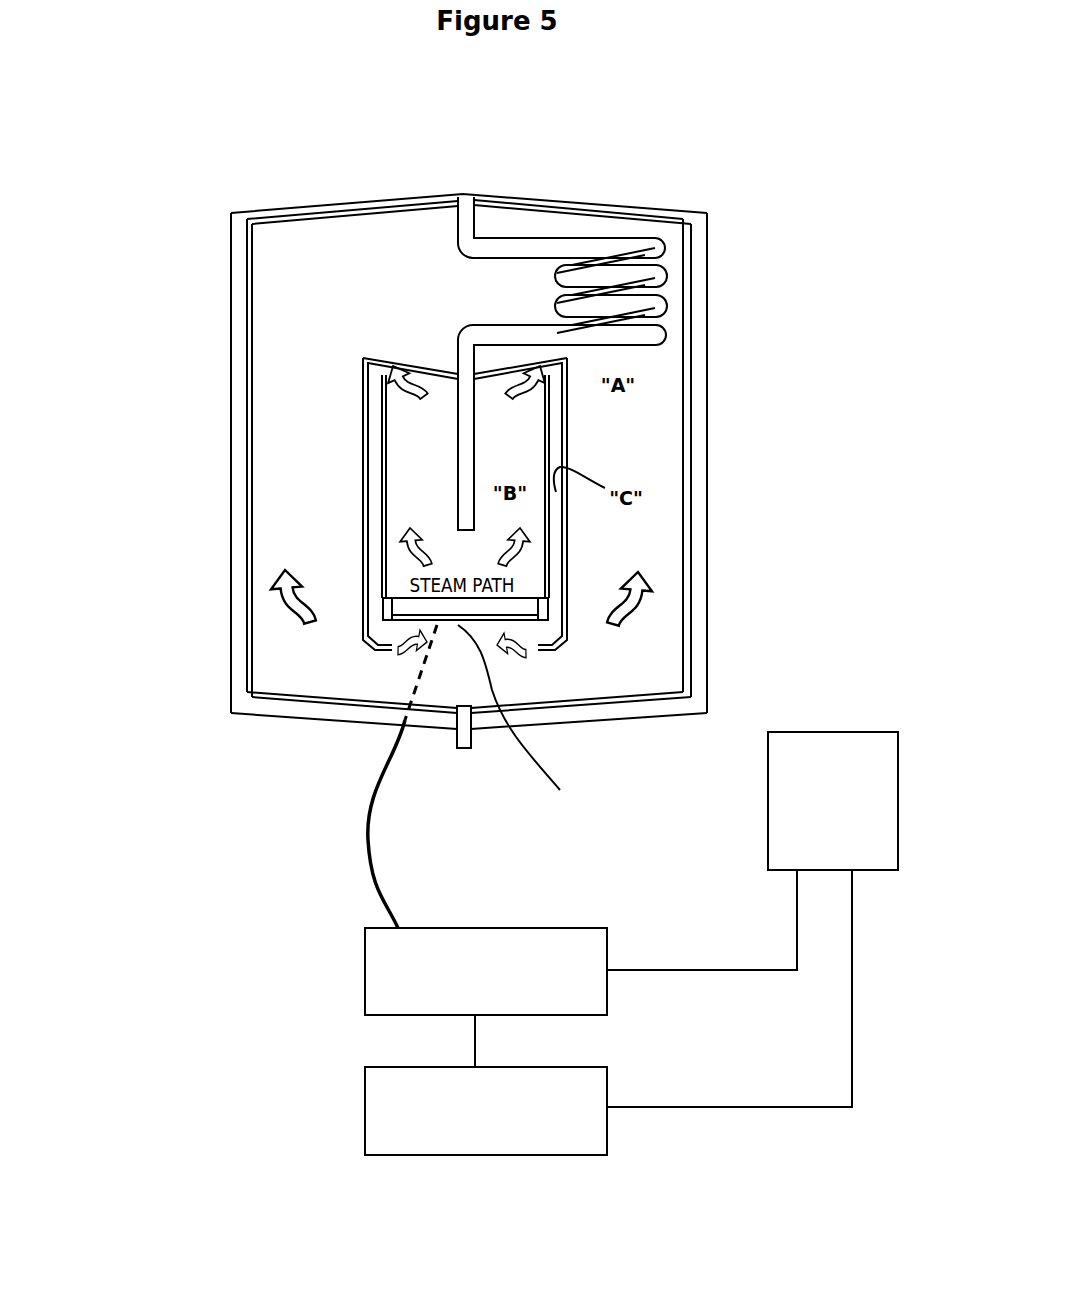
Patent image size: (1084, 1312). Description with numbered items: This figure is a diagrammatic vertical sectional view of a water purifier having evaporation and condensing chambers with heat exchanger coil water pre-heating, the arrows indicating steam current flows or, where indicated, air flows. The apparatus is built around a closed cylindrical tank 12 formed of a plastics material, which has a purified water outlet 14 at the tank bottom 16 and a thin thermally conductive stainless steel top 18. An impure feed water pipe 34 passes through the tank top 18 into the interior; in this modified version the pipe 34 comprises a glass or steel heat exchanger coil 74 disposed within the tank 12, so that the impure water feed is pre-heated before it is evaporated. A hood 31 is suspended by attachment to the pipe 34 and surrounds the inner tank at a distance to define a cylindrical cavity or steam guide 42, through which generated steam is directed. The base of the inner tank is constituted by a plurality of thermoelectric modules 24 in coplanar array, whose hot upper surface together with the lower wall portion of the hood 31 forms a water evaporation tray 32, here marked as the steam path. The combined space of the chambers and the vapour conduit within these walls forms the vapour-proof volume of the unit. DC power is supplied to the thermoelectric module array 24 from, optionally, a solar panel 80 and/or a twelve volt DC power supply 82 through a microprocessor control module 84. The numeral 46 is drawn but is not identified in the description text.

The closed cylindrical tank 12 is at (697, 410).
The purified water outlet 14 is at (452, 742).
The tank bottom 16 is at (292, 722).
The thermally conductive top 18 is at (278, 205).
The thermoelectric modules 24 is at (560, 790).
The hood 31 is at (382, 505).
The water evaporation tray 32 is at (516, 598).
The impure feed water pipe 34 is at (462, 450).
The steam guide 42 is at (372, 467).
The inner top wall 46 is at (310, 210).
The heat exchanger coil 74 is at (635, 277).
The solar panel 80 is at (590, 1127).
The DC power supply 82 is at (790, 732).
The microprocessor control module 84 is at (590, 937).